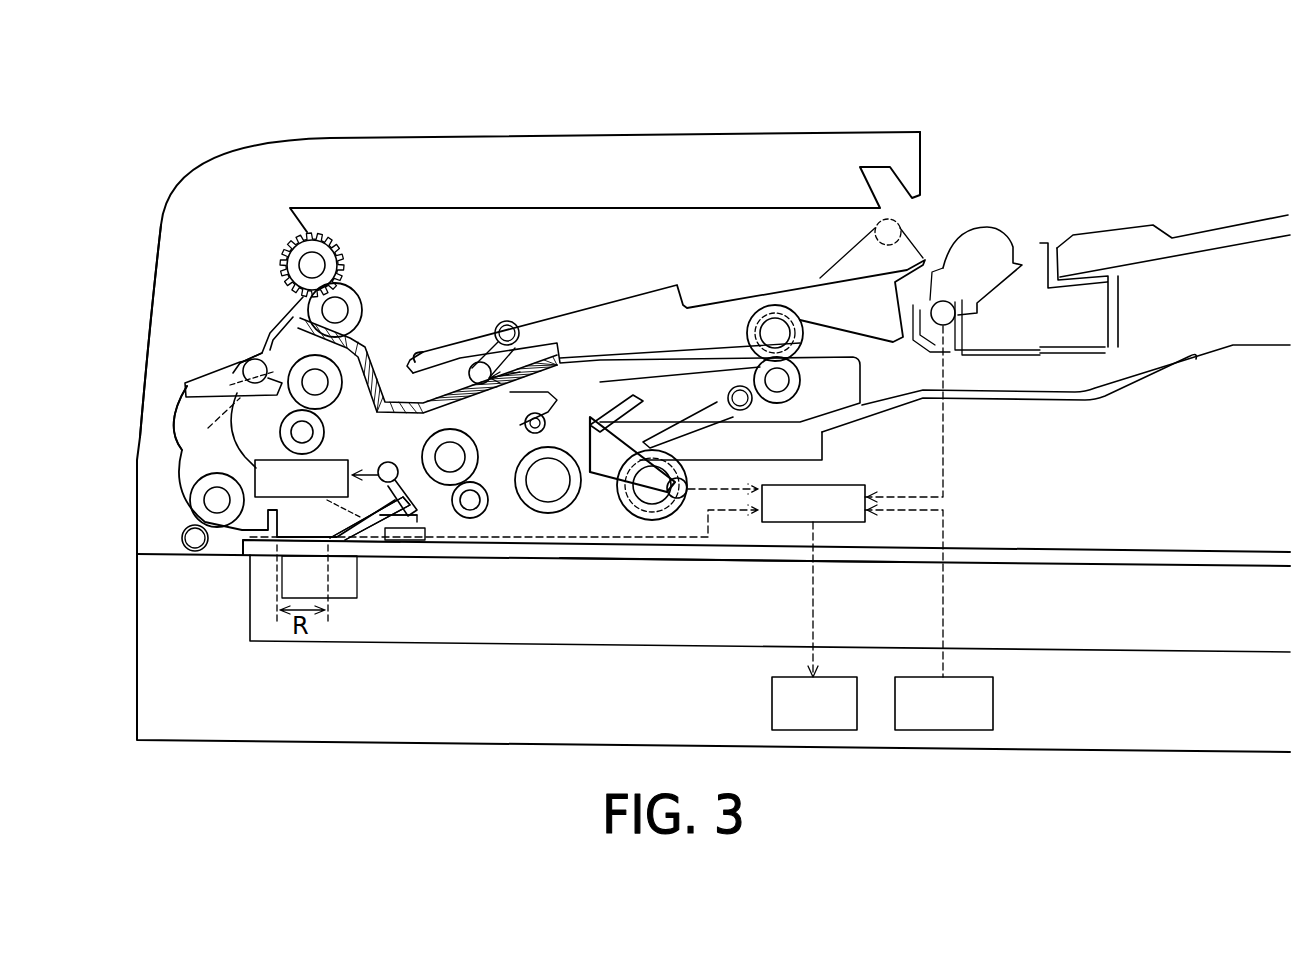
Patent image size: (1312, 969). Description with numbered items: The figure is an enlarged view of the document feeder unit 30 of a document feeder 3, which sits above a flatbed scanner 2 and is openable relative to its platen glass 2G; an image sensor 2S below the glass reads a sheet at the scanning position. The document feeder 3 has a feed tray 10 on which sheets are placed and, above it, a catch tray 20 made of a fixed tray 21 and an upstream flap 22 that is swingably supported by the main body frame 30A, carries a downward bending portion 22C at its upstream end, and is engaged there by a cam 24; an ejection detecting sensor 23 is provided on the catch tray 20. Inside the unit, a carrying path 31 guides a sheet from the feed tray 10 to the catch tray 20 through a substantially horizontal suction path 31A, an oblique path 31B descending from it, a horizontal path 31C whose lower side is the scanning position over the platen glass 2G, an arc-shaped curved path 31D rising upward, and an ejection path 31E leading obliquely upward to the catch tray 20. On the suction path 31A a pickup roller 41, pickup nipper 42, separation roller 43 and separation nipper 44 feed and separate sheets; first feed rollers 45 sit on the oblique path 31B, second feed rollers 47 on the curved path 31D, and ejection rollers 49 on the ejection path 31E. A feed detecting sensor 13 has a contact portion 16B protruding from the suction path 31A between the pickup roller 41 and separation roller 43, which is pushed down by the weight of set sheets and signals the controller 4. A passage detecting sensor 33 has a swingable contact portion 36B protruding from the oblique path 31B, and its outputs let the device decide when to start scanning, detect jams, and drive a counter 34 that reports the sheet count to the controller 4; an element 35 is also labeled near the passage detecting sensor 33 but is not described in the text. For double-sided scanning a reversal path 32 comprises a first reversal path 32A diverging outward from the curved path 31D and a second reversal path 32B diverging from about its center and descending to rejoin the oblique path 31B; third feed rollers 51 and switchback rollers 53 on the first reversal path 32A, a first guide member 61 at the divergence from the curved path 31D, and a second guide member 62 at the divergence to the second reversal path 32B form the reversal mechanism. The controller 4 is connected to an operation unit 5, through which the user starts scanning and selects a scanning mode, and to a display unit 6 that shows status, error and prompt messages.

The flatbed scanner 2 is at (123, 631).
The platen glass 2G is at (740, 558).
The image sensor 2S is at (345, 600).
The document feeder 3 is at (215, 74).
The controller 4 is at (840, 523).
The operation unit 5 is at (995, 690).
The display unit 6 is at (770, 690).
The feed tray 10 is at (1262, 325).
The feed detecting sensor 13 is at (700, 492).
The contact portion 16B is at (605, 470).
The catch tray 20 is at (1200, 179).
The fixed tray 21 is at (1102, 199).
The flap 22 is at (720, 282).
The bending portion 22C is at (425, 348).
The ejection detecting sensor 23 is at (994, 213).
The cam 24 is at (515, 355).
The document feeder unit 30 is at (442, 110).
The main body frame 30A is at (144, 238).
The carrying path 31 is at (249, 292).
The suction path 31A is at (793, 456).
The oblique path 31B is at (443, 510).
The horizontal path 31C is at (326, 554).
The curved path 31D is at (172, 421).
The ejection path 31E is at (245, 327).
The reversal path 32 is at (611, 345).
The first reversal path 32A is at (372, 393).
The second reversal path 32B is at (512, 414).
The passage detecting sensor 33 is at (409, 449).
The counter 34 is at (256, 470).
The platen glass 35 is at (357, 527).
The contact portion 36B is at (440, 511).
The pickup roller 41 is at (660, 515).
The pickup nipper 42 is at (703, 400).
The separation roller 43 is at (572, 495).
The separation nipper 44 is at (637, 395).
The first feed rollers 45 is at (480, 505).
The second feed rollers 47 is at (185, 540).
The ejection rollers 49 is at (332, 258).
The third feed rollers 51 is at (290, 432).
The switchback rollers 53 is at (798, 385).
The first guide member 61 is at (186, 385).
The second guide member 62 is at (555, 385).